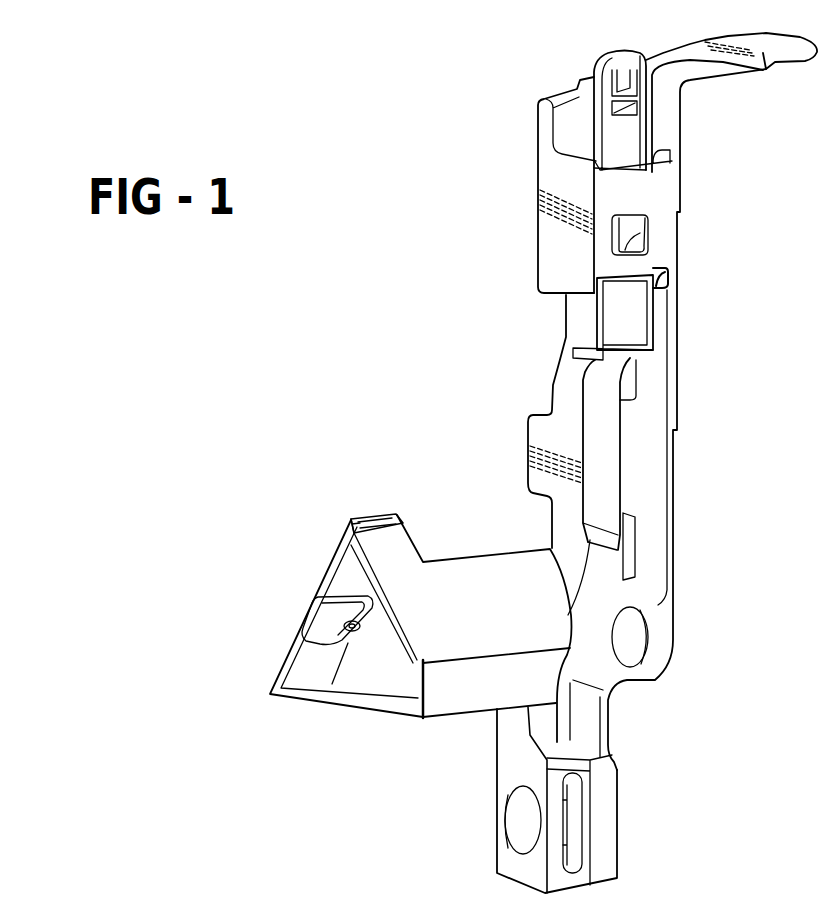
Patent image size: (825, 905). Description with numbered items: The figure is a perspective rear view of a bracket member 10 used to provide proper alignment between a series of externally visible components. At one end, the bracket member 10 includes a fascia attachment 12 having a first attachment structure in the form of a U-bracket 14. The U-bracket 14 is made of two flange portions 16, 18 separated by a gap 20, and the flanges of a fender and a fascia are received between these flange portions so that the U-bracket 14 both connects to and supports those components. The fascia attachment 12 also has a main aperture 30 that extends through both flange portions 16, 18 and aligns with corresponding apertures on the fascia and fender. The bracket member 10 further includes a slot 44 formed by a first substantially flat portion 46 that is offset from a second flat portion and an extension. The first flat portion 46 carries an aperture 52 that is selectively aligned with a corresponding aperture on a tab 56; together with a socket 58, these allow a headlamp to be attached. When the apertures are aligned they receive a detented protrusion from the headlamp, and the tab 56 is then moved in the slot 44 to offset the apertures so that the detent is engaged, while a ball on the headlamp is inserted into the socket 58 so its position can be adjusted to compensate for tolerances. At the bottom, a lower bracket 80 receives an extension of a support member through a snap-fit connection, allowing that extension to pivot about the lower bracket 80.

The bracket member 10 is at (532, 58).
The fascia attachment 12 is at (487, 583).
The U-bracket 14 is at (407, 518).
The flange portion 16 is at (375, 519).
The flange portion 18 is at (345, 585).
The gap 20 is at (353, 524).
The main aperture 30 is at (358, 627).
The slot 44 is at (662, 287).
The first substantially flat portion 46 is at (628, 186).
The aperture 52 is at (627, 249).
The tab 56 is at (618, 316).
The socket 58 is at (628, 628).
The lower bracket 80 is at (578, 856).